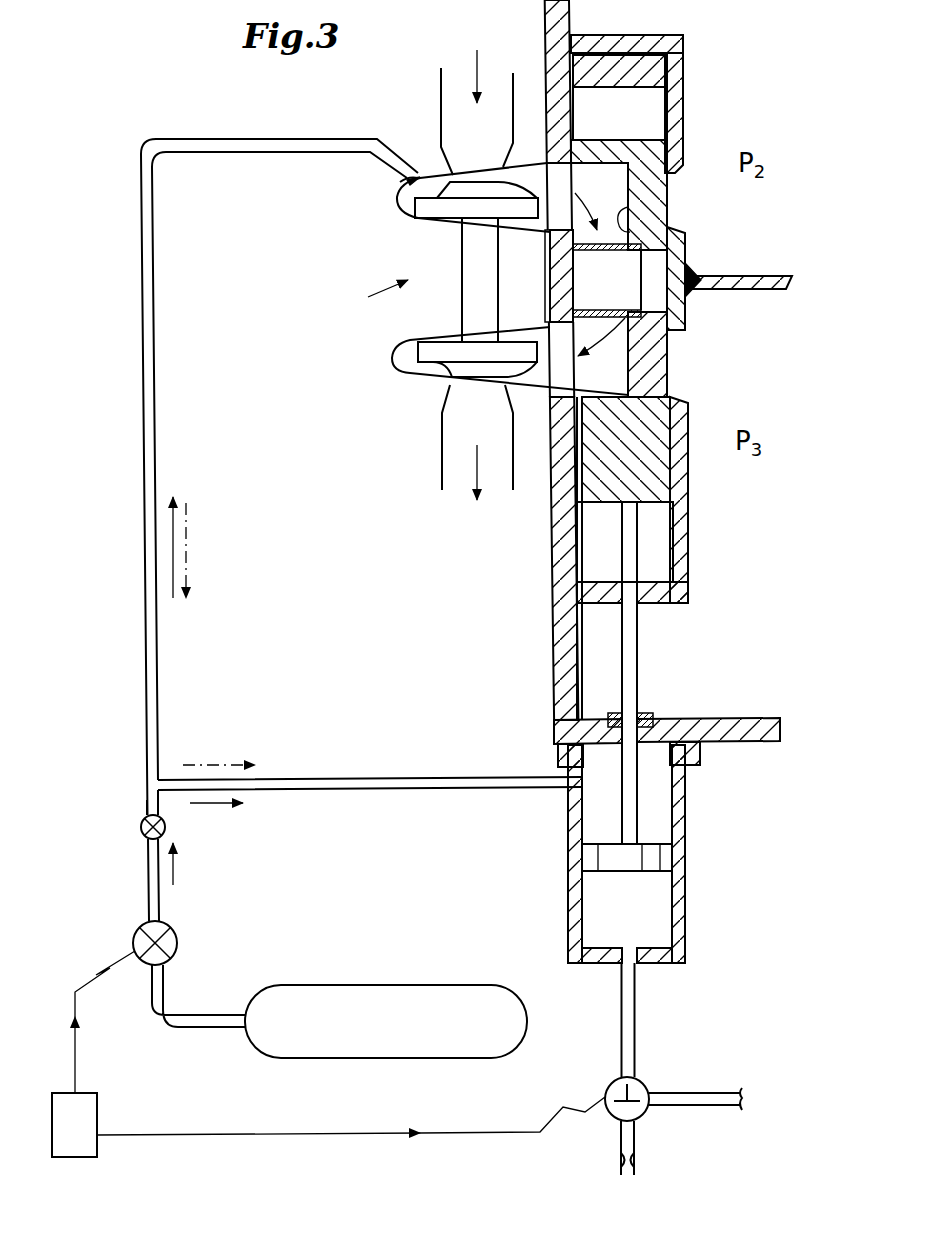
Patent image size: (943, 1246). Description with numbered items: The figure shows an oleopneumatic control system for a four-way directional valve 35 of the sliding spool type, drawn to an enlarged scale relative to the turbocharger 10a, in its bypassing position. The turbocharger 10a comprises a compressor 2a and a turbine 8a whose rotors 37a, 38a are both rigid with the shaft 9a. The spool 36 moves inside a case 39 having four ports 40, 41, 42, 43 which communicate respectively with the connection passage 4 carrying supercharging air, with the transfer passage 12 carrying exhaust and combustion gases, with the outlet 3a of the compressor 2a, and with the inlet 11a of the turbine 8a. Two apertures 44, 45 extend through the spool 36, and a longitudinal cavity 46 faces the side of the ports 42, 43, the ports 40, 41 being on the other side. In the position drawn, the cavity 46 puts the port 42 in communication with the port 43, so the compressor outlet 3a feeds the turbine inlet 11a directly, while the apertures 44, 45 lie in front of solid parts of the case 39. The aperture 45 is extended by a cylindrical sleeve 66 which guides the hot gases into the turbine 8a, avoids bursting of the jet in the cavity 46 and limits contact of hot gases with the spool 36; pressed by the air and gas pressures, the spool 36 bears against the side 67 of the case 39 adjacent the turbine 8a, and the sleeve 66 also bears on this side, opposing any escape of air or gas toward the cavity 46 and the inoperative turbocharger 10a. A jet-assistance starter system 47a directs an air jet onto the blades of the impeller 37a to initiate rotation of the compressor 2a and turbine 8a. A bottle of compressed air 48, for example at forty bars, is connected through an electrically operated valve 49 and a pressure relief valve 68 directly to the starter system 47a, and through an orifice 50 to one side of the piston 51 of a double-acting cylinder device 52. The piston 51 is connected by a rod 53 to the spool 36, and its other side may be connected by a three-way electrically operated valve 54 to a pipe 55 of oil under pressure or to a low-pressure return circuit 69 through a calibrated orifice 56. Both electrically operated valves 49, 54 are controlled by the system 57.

The compressor 2a is at (400, 218).
The outlet of the compressor 3a is at (545, 178).
The connection passage 4 is at (745, 227).
The turbine 8a is at (408, 352).
The shaft 9a is at (476, 303).
The turbocharger 10a is at (360, 298).
The inlet of the turbine 11a is at (545, 378).
The transfer passage 12 is at (755, 380).
The four-way directional valve 35 is at (545, 473).
The spool 36 is at (657, 350).
The rotor of the compressor 37a is at (432, 183).
The rotor of the turbine 38a is at (418, 354).
The case 39 is at (688, 540).
The port 40 is at (680, 190).
The port 41 is at (680, 373).
The port 42 is at (548, 230).
The port 43 is at (557, 350).
The aperture 44 is at (640, 100).
The aperture 45 is at (620, 294).
The longitudinal cavity 46 is at (667, 220).
The starter system 47a is at (398, 182).
The bottle of compressed air 48 is at (396, 1040).
The electrically operated valve 49 is at (172, 932).
The orifice 50 is at (567, 793).
The piston 51 is at (652, 857).
The double-acting cylinder device 52 is at (558, 910).
The rod 53 is at (636, 668).
The three-way electrically operated valve 54 is at (646, 1088).
The pipe of oil under pressure 55 is at (712, 1105).
The calibrated orifice 56 is at (636, 1160).
The system 57 is at (95, 1118).
The cylindrical sleeve 66 is at (616, 322).
The side of the case 67 is at (577, 548).
The pressure relief valve 68 is at (141, 827).
The low-pressure return circuit 69 is at (622, 1140).